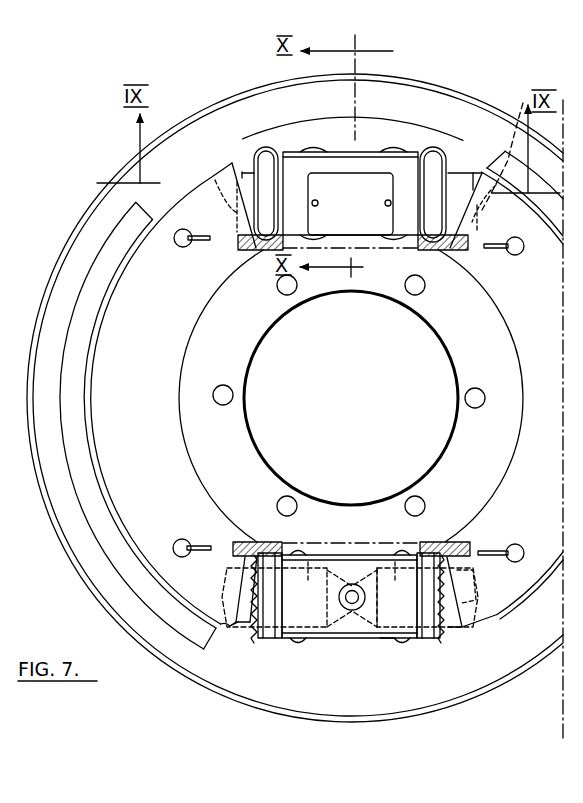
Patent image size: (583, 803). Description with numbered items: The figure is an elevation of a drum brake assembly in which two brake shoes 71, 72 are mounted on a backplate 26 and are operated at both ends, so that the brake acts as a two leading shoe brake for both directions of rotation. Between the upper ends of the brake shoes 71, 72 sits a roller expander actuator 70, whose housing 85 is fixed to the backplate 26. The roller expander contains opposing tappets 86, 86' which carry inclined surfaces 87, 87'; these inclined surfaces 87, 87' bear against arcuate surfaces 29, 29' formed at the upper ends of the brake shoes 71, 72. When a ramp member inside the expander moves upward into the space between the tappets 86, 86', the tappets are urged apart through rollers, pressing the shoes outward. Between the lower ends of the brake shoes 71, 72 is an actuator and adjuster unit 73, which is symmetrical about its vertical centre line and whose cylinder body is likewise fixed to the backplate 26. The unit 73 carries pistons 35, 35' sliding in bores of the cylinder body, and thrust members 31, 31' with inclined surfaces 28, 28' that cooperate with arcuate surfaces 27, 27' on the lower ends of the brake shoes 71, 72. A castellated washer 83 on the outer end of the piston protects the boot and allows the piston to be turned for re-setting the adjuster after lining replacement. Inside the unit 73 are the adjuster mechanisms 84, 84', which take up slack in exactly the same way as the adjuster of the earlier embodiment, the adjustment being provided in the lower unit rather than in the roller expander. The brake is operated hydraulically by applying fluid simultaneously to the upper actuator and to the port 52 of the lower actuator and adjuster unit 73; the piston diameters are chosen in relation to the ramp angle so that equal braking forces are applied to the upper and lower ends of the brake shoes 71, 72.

The backplate 26 is at (423, 704).
The arcuate surface 27 is at (253, 524).
The arcuate surface 27' is at (446, 522).
The inclined surface 28 is at (234, 615).
The inclined surface 28' is at (489, 600).
The arcuate surface 29 is at (259, 266).
The arcuate surface 29' is at (448, 268).
The thrust member 31 is at (268, 617).
The thrust member 31' is at (472, 608).
The piston 35 is at (304, 576).
The piston 35' is at (358, 516).
The port 52 is at (351, 603).
The roller expander actuator 70 is at (361, 130).
The brake shoe 71 is at (184, 362).
The brake shoe 72 is at (521, 372).
The actuator and adjuster unit 73 is at (352, 538).
The castellated washer 83 is at (445, 640).
The adjuster mechanism 84 is at (350, 570).
The adjuster mechanism 84' is at (400, 666).
The housing 85 is at (380, 177).
The tappet 86 is at (235, 178).
The tappet 86' is at (472, 181).
The inclined surface 87 is at (149, 393).
The inclined surface 87' is at (512, 344).